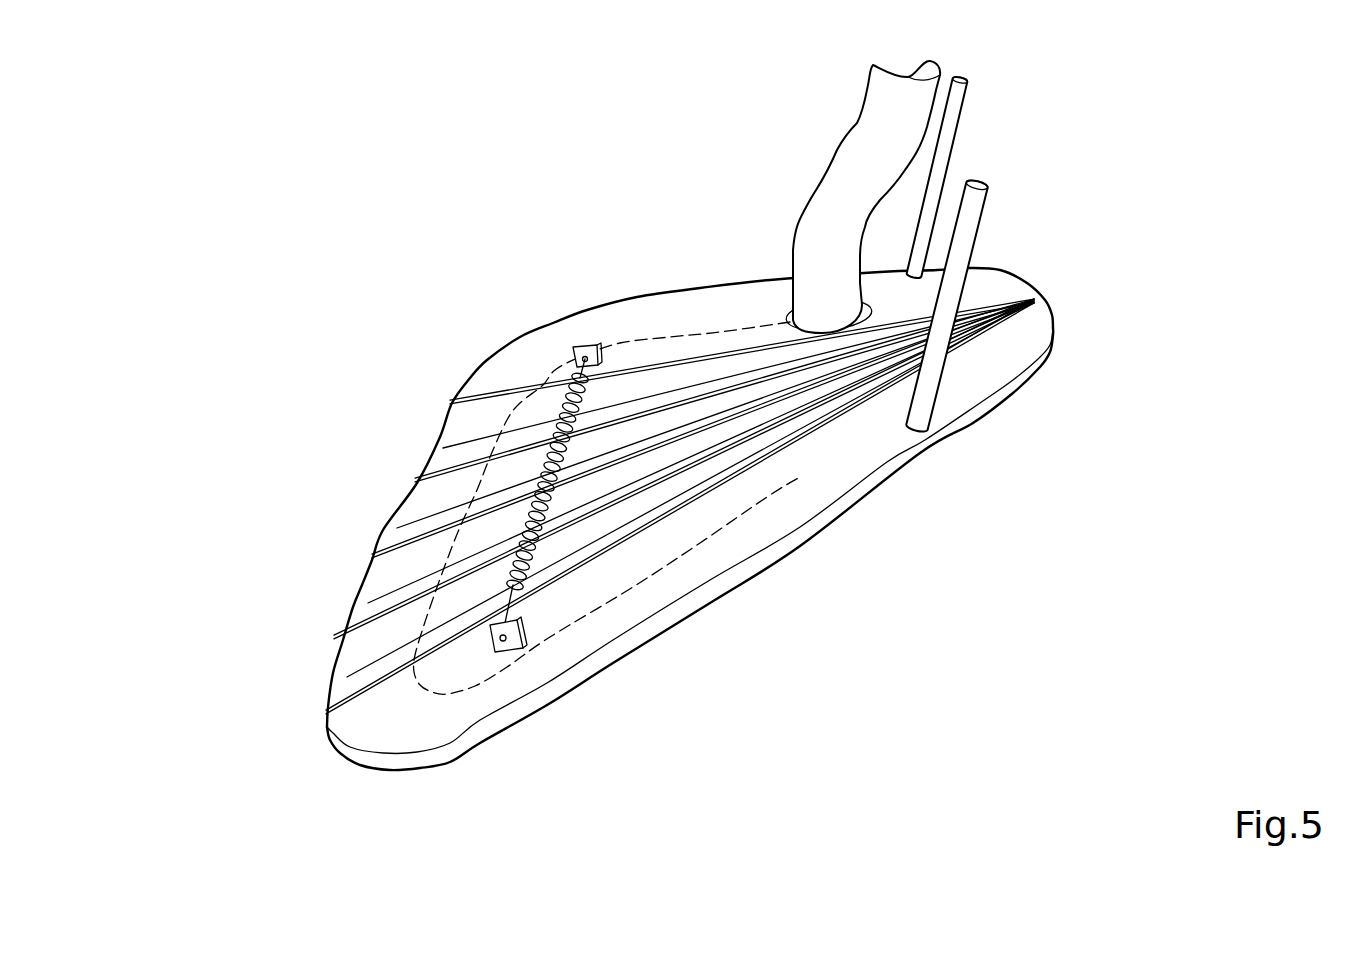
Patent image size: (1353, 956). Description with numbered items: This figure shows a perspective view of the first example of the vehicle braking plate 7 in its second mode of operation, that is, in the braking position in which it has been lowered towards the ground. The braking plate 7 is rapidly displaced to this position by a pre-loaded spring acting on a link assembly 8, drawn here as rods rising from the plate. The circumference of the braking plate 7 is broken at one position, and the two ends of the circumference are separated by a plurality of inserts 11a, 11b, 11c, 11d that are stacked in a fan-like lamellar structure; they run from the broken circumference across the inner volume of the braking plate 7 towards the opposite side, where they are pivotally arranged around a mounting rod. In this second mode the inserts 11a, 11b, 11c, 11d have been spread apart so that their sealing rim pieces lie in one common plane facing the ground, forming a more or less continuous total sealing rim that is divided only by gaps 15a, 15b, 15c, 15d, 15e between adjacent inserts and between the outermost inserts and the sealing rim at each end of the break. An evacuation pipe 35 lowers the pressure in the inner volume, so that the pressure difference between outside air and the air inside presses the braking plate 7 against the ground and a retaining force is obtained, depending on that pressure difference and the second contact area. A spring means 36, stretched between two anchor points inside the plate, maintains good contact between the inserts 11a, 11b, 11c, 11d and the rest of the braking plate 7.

The braking plate 7 is at (391, 156).
The link assembly 8 is at (950, 133).
The evacuation pipe 35 is at (825, 203).
The spring means 36 is at (550, 410).
The gap 15a is at (323, 715).
The gap 15b is at (332, 637).
The gap 15c is at (362, 558).
The gap 15d is at (410, 480).
The gap 15e is at (447, 402).
The insert 11a is at (347, 677).
The insert 11b is at (368, 603).
The insert 11c is at (397, 528).
The insert 11d is at (443, 448).